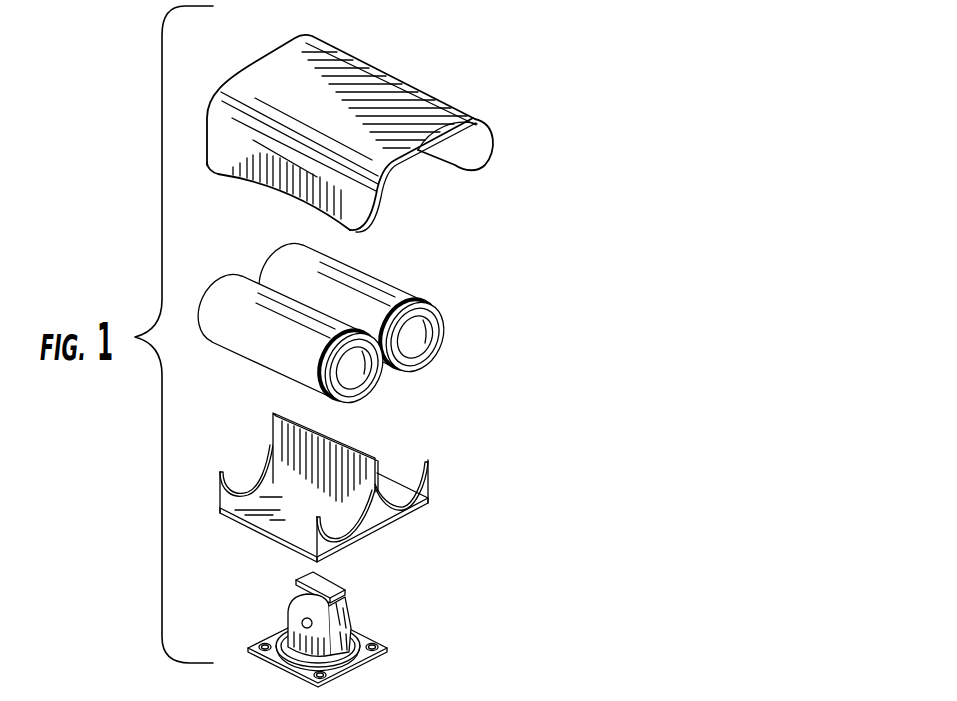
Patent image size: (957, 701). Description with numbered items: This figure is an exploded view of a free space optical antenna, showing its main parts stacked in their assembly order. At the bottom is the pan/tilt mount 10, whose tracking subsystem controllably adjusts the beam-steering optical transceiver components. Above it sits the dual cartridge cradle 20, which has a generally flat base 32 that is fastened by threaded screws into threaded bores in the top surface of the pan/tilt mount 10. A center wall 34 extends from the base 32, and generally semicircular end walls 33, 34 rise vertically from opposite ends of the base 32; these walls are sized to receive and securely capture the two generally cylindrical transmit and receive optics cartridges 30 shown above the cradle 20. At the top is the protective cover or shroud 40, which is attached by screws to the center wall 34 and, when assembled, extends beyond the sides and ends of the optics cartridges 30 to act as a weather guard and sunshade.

The pan/tilt mount 10 is at (388, 630).
The dual cartridge cradle 20 is at (339, 484).
The optical cartridges 30 is at (277, 265).
The flat base 32 is at (272, 515).
The end wall 33 is at (253, 480).
The center wall 34 is at (343, 443).
The protective cover or shroud 40 is at (454, 97).